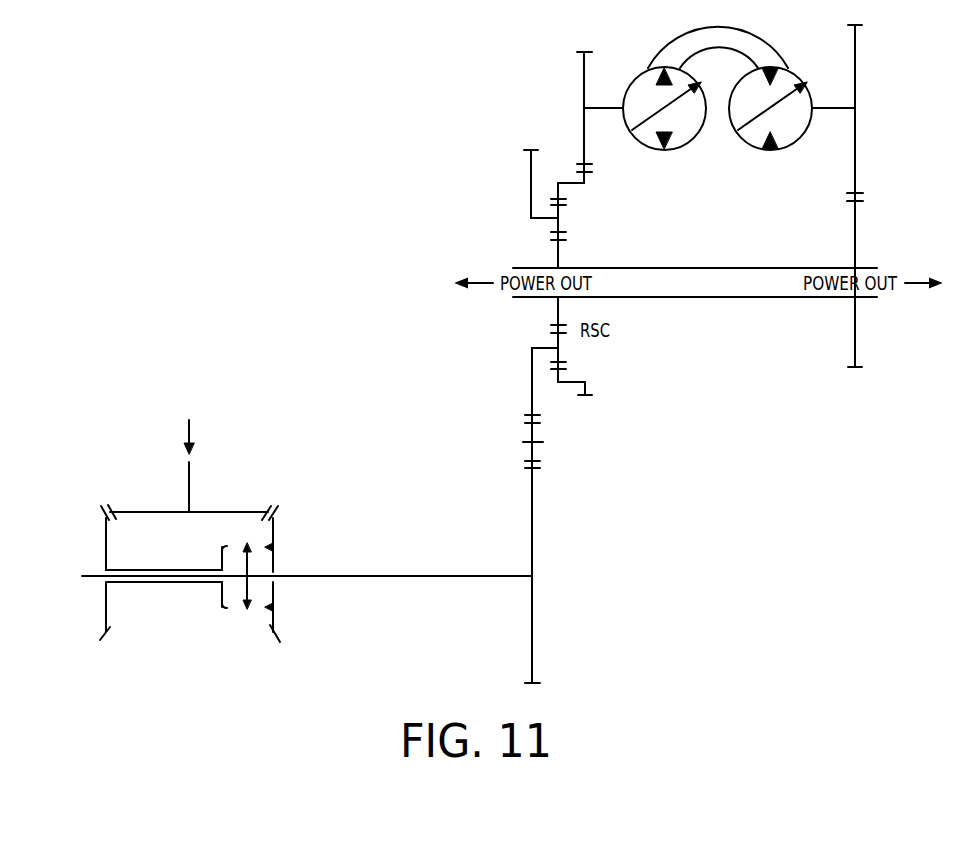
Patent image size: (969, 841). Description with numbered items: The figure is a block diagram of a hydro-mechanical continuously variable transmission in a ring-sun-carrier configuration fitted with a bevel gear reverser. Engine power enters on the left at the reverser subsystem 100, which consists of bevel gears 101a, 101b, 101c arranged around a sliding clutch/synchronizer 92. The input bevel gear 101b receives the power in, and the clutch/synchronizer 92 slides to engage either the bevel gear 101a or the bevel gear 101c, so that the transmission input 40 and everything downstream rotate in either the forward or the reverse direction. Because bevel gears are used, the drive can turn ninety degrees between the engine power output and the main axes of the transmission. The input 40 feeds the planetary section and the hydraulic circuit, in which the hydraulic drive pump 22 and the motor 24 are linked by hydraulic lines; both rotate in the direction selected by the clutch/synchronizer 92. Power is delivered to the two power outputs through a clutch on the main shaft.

The hydraulic drive pump 22 is at (687, 124).
The motor 24 is at (792, 124).
The transmission input 40 is at (531, 142).
The clutch/synchronizer 92 is at (242, 621).
The reverser subsystem 100 is at (188, 531).
The bevel gear 101a is at (106, 531).
The bevel gear 101b is at (218, 510).
The bevel gear 101c is at (274, 530).